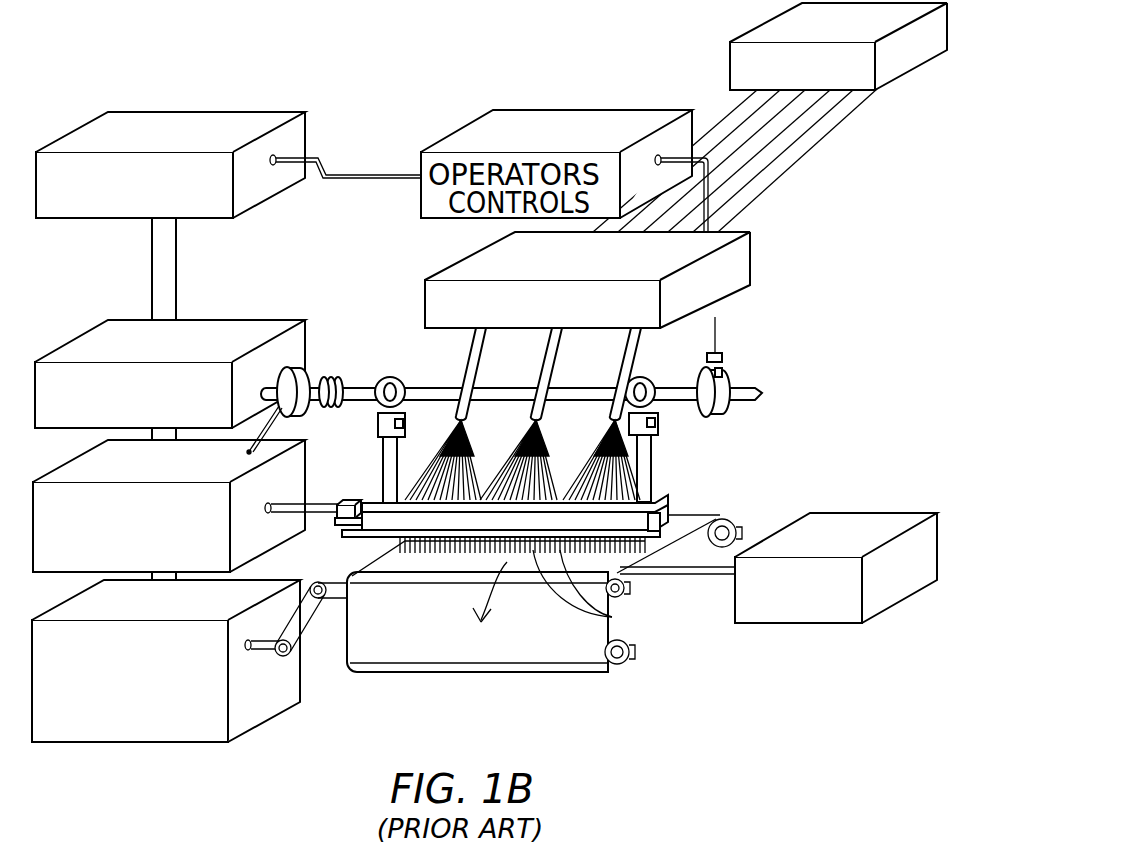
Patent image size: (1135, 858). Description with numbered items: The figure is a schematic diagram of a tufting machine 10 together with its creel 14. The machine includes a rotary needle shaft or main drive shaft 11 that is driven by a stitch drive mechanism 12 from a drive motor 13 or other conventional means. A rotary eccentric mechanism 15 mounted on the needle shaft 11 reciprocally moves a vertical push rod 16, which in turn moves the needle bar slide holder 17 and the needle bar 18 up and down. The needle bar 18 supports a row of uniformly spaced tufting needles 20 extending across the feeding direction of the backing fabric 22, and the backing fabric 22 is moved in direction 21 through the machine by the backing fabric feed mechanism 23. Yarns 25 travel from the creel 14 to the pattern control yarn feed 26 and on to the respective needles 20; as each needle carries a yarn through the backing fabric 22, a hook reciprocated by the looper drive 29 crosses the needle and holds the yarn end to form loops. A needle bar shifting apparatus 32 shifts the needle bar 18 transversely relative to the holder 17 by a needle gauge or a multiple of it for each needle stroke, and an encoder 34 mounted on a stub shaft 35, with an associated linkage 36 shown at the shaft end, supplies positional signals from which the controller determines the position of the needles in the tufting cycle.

The tufting machine 10 is at (762, 346).
The rotary needle shaft 11 is at (516, 388).
The stitch drive mechanism 12 is at (221, 352).
The drive motor 13 is at (177, 147).
The creel 14 is at (854, 35).
The rotary eccentric mechanism 15 is at (396, 378).
The vertical push rod 16 is at (384, 470).
The needle bar slide holder 17 is at (385, 530).
The needle bar 18 is at (340, 530).
The tufting needles 20 is at (612, 617).
The direction 21 is at (475, 596).
The backing fabric 22 is at (554, 646).
The backing fabric feed mechanism 23 is at (221, 613).
The yarns 25 is at (591, 476).
The pattern control yarn feed 26 is at (585, 267).
The looper drive 29 is at (836, 547).
The needle bar shifting apparatus 32 is at (219, 473).
The encoder 34 is at (283, 378).
The stub shaft 35 is at (308, 386).
The linkage 36 is at (346, 410).